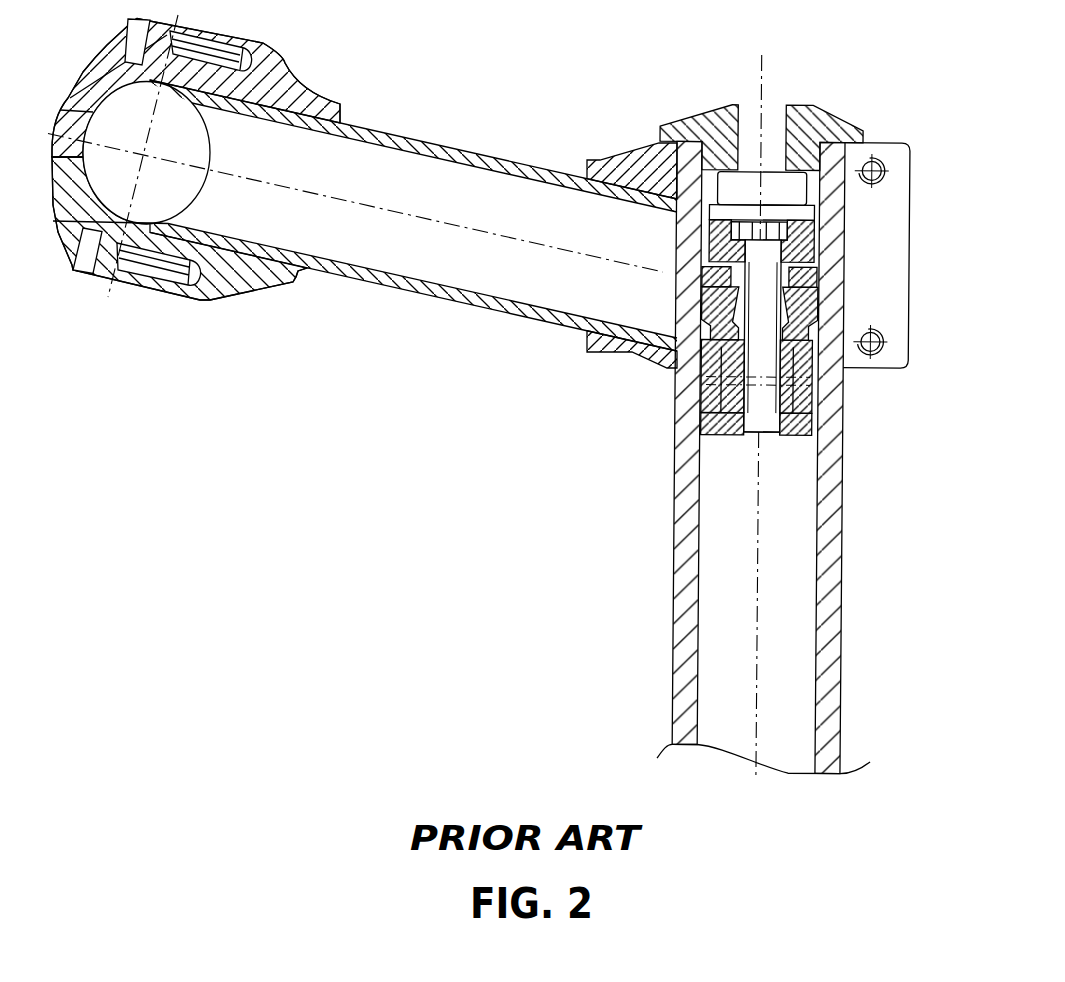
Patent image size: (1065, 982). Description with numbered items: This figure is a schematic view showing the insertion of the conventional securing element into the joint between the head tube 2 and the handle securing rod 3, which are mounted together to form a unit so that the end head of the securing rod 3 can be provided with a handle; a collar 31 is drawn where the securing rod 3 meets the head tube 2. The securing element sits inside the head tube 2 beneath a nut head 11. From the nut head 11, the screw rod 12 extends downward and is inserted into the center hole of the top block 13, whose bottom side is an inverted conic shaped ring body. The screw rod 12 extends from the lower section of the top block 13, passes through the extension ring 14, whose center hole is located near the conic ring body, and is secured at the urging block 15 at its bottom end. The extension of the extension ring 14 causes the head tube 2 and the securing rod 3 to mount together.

The head tube 2 is at (694, 650).
The handle securing rod 3 is at (399, 121).
The collar 31 is at (607, 172).
The nut head 11 is at (827, 122).
The screw rod 12 is at (768, 305).
The top block 13 is at (802, 330).
The extension ring 14 is at (808, 396).
The urging block 15 is at (789, 424).